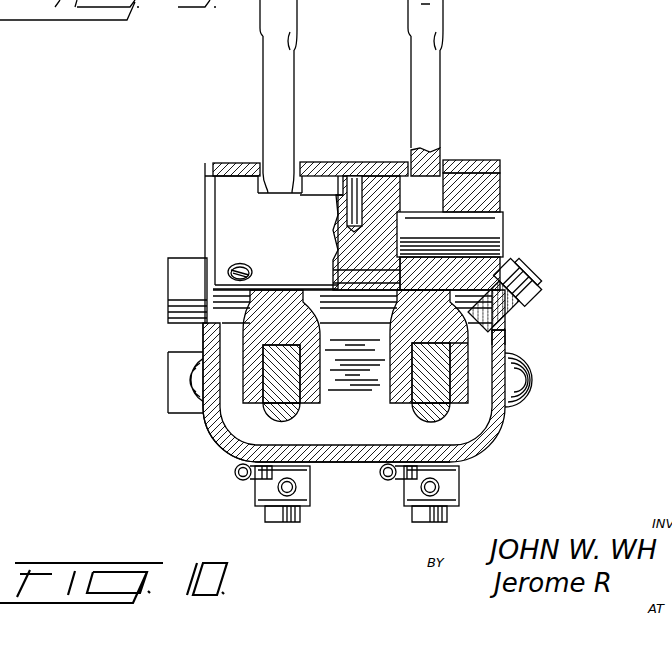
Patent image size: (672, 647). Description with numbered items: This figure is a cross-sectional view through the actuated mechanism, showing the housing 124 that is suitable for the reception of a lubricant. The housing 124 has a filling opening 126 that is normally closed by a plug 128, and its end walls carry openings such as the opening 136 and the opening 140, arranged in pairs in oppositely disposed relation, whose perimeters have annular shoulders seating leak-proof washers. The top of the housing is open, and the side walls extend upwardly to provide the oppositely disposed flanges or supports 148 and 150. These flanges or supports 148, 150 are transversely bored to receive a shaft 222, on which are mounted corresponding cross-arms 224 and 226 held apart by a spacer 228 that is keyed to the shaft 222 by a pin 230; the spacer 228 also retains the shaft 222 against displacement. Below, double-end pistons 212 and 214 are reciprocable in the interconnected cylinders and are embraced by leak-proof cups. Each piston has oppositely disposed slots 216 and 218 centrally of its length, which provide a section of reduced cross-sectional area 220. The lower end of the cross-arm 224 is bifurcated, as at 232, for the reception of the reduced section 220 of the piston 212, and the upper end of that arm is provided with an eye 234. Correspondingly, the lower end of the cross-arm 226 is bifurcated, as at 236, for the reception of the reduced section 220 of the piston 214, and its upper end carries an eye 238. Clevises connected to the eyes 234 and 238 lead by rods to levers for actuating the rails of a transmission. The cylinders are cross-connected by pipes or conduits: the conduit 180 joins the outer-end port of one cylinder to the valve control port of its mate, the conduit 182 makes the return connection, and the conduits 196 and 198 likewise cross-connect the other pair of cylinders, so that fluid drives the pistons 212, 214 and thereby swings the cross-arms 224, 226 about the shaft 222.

The housing 124 is at (520, 378).
The filling opening 126 is at (524, 310).
The plug 128 is at (535, 277).
The opening 136 is at (400, 403).
The opening 140 is at (302, 400).
The flange or support 148 is at (500, 176).
The flange or support 150 is at (208, 207).
The pipe or conduit 180 is at (388, 481).
The pipe or conduit 182 is at (428, 494).
The pipe or conduit 196 is at (245, 481).
The pipe or conduit 198 is at (283, 494).
The double-end piston 212 is at (468, 405).
The double-end piston 214 is at (258, 405).
The slot 216 is at (300, 420).
The slot 218 is at (265, 408).
The section of reduced cross-sectional area 220 is at (272, 410).
The shaft 222 is at (492, 230).
The cross-arm 224 is at (433, 80).
The cross-arm 226 is at (275, 98).
The spacer 228 is at (377, 163).
The pin 230 is at (359, 206).
The bifurcated lower end 232 is at (500, 340).
The eye 234 is at (435, 17).
The bifurcated lower end 236 is at (215, 343).
The eye 238 is at (268, 25).